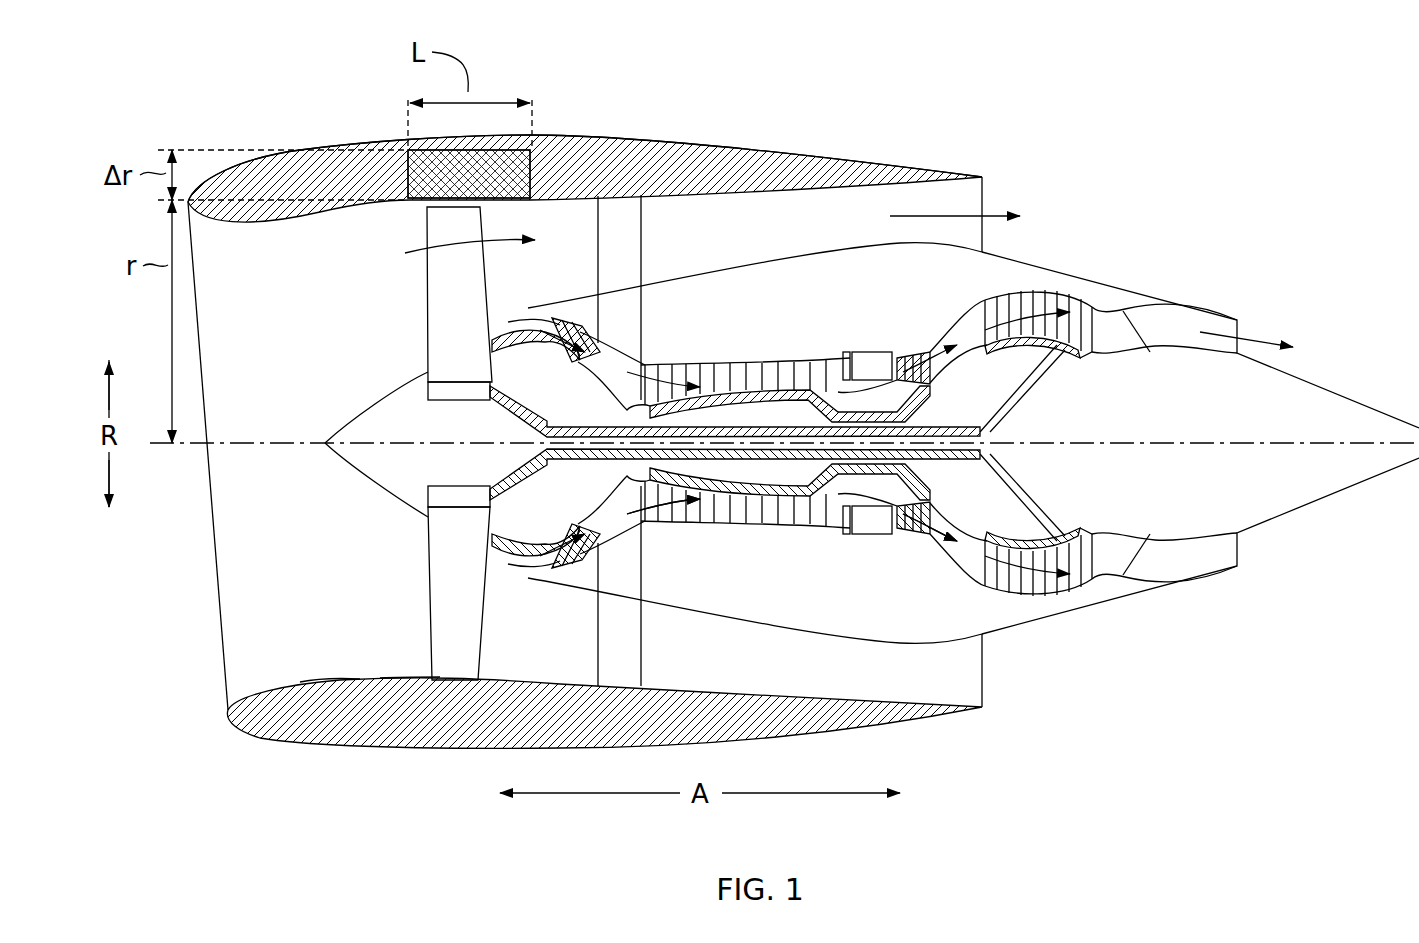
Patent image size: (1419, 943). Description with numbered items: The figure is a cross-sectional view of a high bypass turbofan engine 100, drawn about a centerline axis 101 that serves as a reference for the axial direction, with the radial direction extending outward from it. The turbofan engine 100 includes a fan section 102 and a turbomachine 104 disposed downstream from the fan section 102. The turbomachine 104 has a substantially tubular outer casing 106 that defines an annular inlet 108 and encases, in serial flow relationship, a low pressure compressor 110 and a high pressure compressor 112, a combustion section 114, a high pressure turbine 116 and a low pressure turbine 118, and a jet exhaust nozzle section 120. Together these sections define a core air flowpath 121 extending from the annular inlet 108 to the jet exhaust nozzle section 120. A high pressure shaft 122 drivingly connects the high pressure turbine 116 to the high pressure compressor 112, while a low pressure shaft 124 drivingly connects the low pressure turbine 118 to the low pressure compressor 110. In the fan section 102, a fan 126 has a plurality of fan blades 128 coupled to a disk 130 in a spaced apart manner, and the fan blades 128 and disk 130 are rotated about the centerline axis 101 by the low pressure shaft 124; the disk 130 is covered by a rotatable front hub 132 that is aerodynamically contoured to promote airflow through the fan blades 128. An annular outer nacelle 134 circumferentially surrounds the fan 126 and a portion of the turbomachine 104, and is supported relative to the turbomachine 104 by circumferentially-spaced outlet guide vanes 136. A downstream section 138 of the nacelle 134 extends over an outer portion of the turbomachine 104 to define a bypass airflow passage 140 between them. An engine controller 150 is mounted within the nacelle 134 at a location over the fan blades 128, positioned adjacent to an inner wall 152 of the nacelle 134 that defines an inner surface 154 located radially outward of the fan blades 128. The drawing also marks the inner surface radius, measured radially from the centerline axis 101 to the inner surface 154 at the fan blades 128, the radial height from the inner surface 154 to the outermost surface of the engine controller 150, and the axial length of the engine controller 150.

The turbofan engine 100 is at (1145, 142).
The centerline axis 101 is at (1150, 443).
The fan section 102 is at (383, 222).
The turbomachine 104 is at (800, 215).
The outer casing 106 is at (800, 620).
The annular inlet 108 is at (530, 568).
The low pressure compressor 110 is at (585, 585).
The high pressure compressor 112 is at (675, 515).
The combustion section 114 is at (855, 540).
The high pressure turbine 116 is at (935, 525).
The low pressure turbine 118 is at (1063, 595).
The jet exhaust nozzle section 120 is at (1135, 565).
The core air flowpath 121 is at (625, 530).
The high pressure shaft 122 is at (985, 468).
The low pressure shaft 124 is at (935, 432).
The fan 126 is at (375, 322).
The fan blades 128 is at (428, 605).
The disk 130 is at (432, 377).
The front hub 132 is at (365, 487).
The outer nacelle 134 is at (462, 752).
The outlet guide vanes 136 is at (643, 243).
The downstream section 138 is at (915, 160).
The bypass airflow passage 140 is at (838, 227).
The engine controller 150 is at (530, 148).
The inner wall 152 is at (340, 675).
The inner surface 154 is at (386, 672).